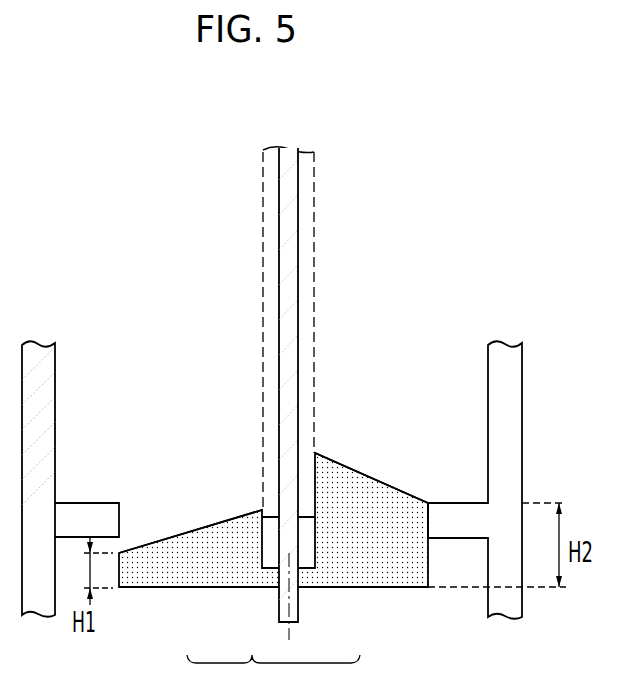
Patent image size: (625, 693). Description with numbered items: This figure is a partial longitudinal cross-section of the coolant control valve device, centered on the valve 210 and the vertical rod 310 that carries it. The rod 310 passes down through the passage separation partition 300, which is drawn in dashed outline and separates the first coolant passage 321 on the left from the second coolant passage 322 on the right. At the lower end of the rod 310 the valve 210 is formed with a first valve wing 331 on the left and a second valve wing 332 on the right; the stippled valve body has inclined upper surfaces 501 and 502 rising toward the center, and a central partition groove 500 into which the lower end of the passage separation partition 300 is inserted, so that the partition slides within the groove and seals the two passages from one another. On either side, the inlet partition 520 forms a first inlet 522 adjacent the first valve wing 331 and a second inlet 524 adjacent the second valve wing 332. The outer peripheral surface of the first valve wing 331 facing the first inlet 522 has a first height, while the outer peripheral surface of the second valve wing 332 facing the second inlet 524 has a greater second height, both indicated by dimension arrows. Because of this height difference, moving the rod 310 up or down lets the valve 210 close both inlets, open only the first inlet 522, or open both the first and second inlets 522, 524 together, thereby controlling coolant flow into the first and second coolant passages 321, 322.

The valve 210 is at (273, 674).
The passage separation partition 300 is at (314, 278).
The rod 310 is at (290, 305).
The first coolant passage 321 is at (219, 219).
The second coolant passage 322 is at (409, 219).
The first valve wing 331 is at (213, 572).
The second valve wing 332 is at (352, 573).
The partition groove 500 is at (307, 558).
The first inclined surface 501 is at (225, 522).
The second inclined surface 502 is at (345, 462).
The inlet partition 520 is at (91, 517).
The first inlet 522 is at (121, 519).
The second inlet 524 is at (418, 505).